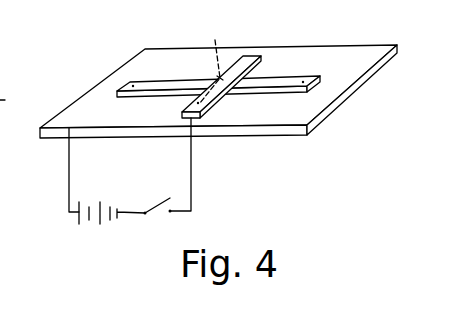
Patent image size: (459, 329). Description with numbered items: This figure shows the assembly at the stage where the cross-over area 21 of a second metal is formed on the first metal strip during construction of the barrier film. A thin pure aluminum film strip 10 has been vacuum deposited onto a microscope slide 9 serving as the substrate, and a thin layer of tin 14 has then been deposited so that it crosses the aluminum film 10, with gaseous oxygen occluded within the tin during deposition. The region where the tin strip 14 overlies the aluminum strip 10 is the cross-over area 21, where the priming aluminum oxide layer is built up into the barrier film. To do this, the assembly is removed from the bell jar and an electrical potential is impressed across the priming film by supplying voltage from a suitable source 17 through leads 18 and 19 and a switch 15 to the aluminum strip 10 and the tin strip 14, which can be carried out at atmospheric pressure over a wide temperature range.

The microscope slide 9 is at (307, 108).
The aluminum film strip 10 is at (302, 82).
The tin film strip 14 is at (247, 61).
The cross-over area 21 is at (216, 62).
The lead 18 is at (69, 178).
The lead 19 is at (191, 178).
The voltage source 17 is at (105, 200).
The switch 15 is at (153, 214).